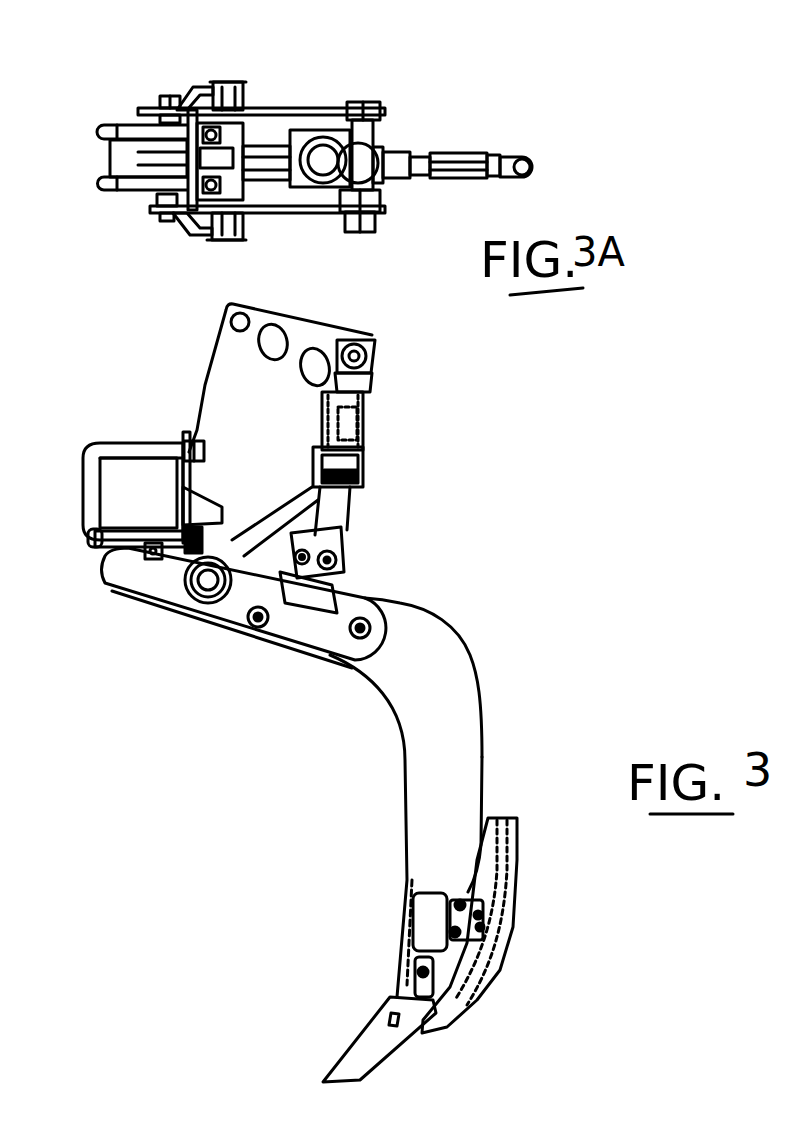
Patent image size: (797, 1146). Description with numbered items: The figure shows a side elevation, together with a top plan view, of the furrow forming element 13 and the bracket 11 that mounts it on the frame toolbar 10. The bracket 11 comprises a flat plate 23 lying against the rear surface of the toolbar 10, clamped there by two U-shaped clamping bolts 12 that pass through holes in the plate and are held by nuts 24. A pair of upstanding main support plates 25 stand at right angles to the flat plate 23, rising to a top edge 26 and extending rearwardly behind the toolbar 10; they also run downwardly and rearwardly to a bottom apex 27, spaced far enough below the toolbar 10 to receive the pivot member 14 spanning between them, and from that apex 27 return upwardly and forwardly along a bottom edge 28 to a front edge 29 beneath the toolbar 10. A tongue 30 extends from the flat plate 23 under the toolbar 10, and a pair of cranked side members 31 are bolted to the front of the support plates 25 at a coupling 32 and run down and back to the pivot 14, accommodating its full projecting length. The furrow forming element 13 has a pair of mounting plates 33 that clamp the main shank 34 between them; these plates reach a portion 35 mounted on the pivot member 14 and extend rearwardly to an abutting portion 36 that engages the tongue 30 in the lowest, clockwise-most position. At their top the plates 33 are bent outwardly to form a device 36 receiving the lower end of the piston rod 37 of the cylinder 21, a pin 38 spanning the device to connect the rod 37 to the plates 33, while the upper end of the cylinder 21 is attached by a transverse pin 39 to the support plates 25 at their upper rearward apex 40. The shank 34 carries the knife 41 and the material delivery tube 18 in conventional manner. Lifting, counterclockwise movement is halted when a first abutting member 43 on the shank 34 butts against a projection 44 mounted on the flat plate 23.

In FIG. 3, the toolbar 10 is at (98, 543).
In FIG. 3, the bracket 11 is at (213, 370).
In FIG. 3A, the U-shaped clamping bolts 12 is at (96, 129).
In FIG. 3, the U-shaped clamping bolts 12 is at (108, 440).
In FIG. 3, the furrow forming element 13 is at (482, 646).
In FIG. 3A, the pivot member 14 is at (238, 84).
In FIG. 3, the pivot member 14 is at (183, 611).
In FIG. 3A, the material delivery tube 18 is at (532, 167).
In FIG. 3, the material delivery tube 18 is at (495, 880).
In FIG. 3A, the cylinder 21 is at (363, 153).
In FIG. 3, the cylinder 21 is at (365, 408).
In FIG. 3A, the flat plate 23 is at (140, 154).
In FIG. 3, the flat plate 23 is at (186, 482).
In FIG. 3, the nuts 24 is at (197, 430).
In FIG. 3A, the main support plates 25 is at (308, 115).
In FIG. 3, the main support plates 25 is at (310, 333).
In FIG. 3, the top edge 26 is at (265, 305).
In FIG. 3, the bottom apex 27 is at (207, 612).
In FIG. 3, the bottom edge 28 is at (123, 570).
In FIG. 3, the front edge 29 is at (118, 542).
In FIG. 3, the tongue 30 is at (127, 530).
In FIG. 3A, the side members 31 is at (200, 93).
In FIG. 3A, the coupling 32 is at (160, 97).
In FIG. 3A, the mounting plates 33 is at (312, 133).
In FIG. 3, the mounting plates 33 is at (303, 635).
In FIG. 3A, the main shank 34 is at (491, 157).
In FIG. 3, the main shank 34 is at (419, 627).
In FIG. 3, the portion mounted on the pivot member 35 is at (238, 528).
In FIG. 3, the abutting portion / device 36 is at (340, 542).
In FIG. 3, the piston rod 37 is at (342, 546).
In FIG. 3, the pin 38 is at (377, 540).
In FIG. 3, the transverse pin 39 is at (376, 353).
In FIG. 3, the upper rearward apex 40 is at (367, 340).
In FIG. 3, the knife 41 is at (377, 1027).
In FIG. 3, the first abutting member 43 is at (364, 467).
In FIG. 3, the projection 44 is at (232, 488).